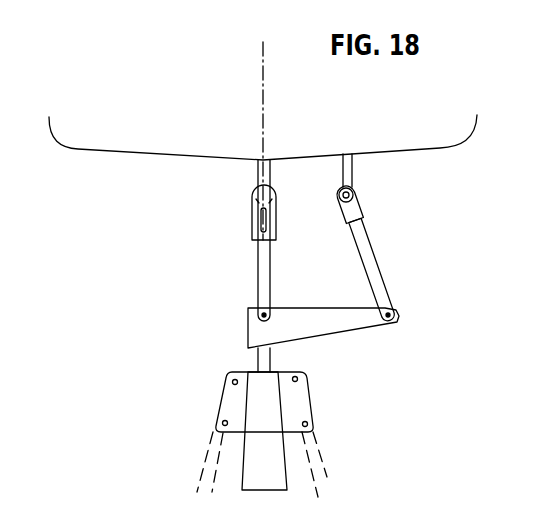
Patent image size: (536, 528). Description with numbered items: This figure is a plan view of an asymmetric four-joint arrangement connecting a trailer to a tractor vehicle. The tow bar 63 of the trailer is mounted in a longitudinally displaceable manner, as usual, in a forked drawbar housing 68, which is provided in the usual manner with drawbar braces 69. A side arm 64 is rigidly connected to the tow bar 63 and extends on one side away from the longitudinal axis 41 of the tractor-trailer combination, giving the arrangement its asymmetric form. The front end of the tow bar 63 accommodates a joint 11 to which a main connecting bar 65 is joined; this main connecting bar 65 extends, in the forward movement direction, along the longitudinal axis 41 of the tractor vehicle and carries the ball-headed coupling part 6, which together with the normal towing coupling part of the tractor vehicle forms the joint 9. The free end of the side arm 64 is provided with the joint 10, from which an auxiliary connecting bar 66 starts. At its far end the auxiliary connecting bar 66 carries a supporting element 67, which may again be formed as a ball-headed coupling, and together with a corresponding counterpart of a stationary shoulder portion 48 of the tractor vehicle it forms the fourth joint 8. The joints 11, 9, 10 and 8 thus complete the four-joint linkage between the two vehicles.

The longitudinal axis 41 is at (262, 70).
The ball-headed coupling part 6 is at (250, 195).
The joint 9 is at (276, 183).
The fourth joint 8 is at (336, 181).
The stationary shoulder portion 48 is at (352, 177).
The supporting element 67 is at (355, 202).
The auxiliary connecting bar 66 is at (376, 270).
The main connecting bar 65 is at (270, 275).
The joint 11 is at (261, 308).
The joint 10 is at (394, 318).
The tow bar 63 is at (258, 360).
The side arm 64 is at (318, 332).
The forked drawbar housing 68 is at (263, 412).
The drawbar braces 69 is at (323, 482).